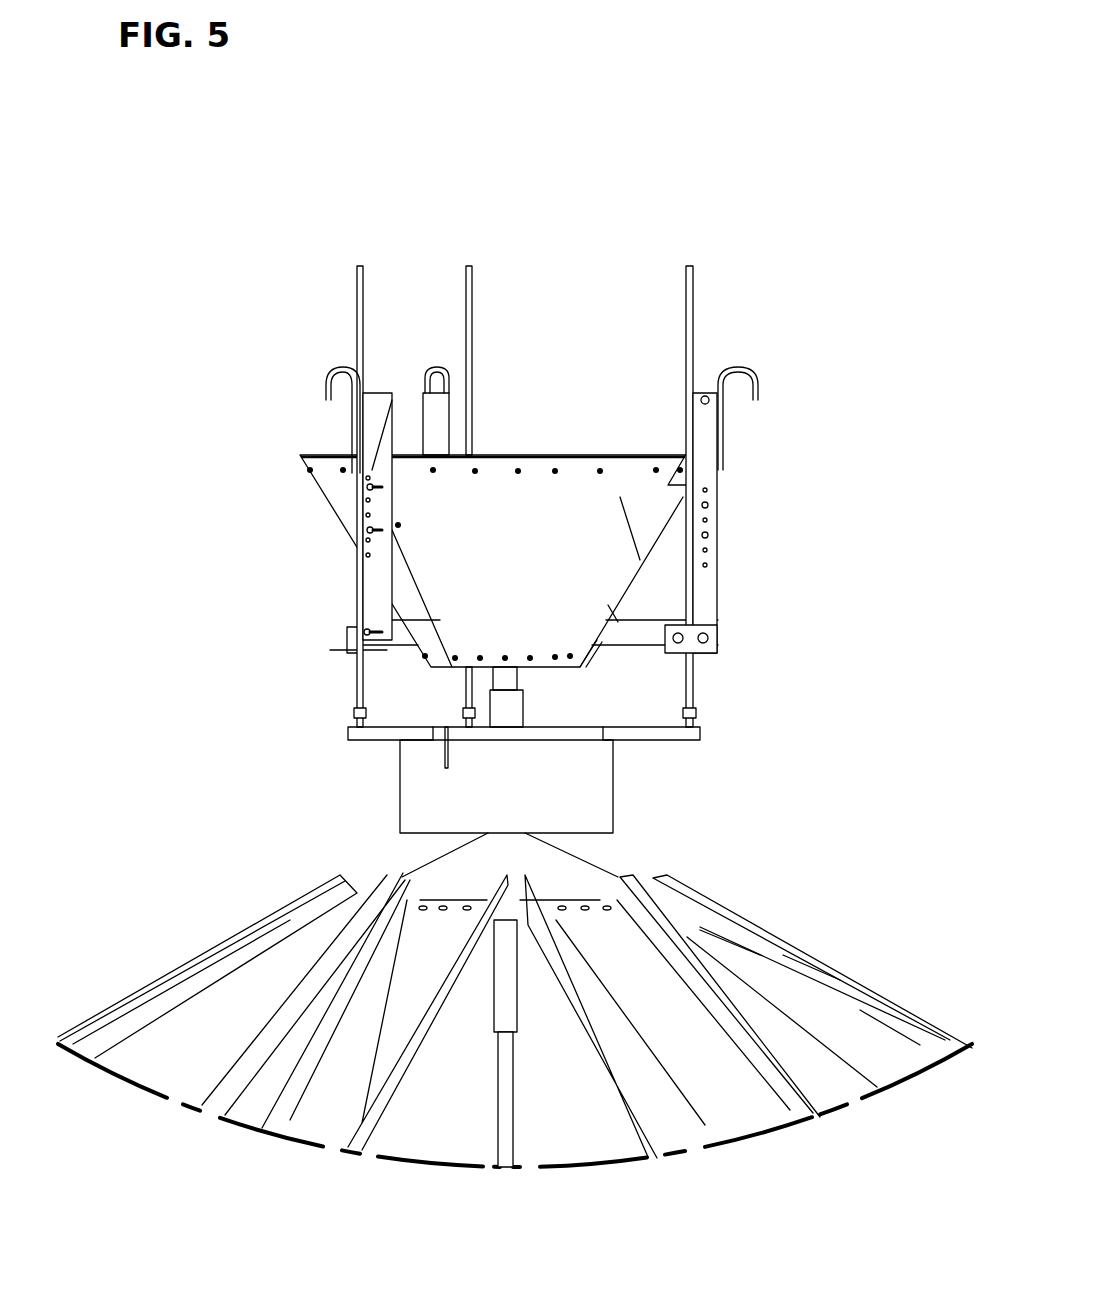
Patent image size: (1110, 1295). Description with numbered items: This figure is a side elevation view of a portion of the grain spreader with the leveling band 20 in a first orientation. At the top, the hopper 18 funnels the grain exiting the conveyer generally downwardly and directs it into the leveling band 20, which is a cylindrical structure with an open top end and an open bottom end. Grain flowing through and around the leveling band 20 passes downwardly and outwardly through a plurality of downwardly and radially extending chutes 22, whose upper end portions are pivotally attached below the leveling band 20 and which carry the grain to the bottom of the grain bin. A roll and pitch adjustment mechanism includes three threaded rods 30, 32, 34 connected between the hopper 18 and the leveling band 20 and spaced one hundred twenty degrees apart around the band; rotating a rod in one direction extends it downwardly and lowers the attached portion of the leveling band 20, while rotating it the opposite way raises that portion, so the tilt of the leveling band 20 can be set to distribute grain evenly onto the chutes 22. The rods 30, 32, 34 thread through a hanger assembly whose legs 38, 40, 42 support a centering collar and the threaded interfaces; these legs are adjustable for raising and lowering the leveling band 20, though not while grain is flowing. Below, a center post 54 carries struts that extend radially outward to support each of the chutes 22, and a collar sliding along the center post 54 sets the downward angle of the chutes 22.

The hopper 18 is at (548, 578).
The leveling band 20 is at (560, 803).
The chutes 22 is at (657, 966).
The rod 30 is at (694, 340).
The rod 32 is at (475, 302).
The rod 34 is at (362, 313).
The leg 38 is at (718, 597).
The leg 40 is at (449, 432).
The leg 42 is at (355, 586).
The center post 54 is at (507, 1097).